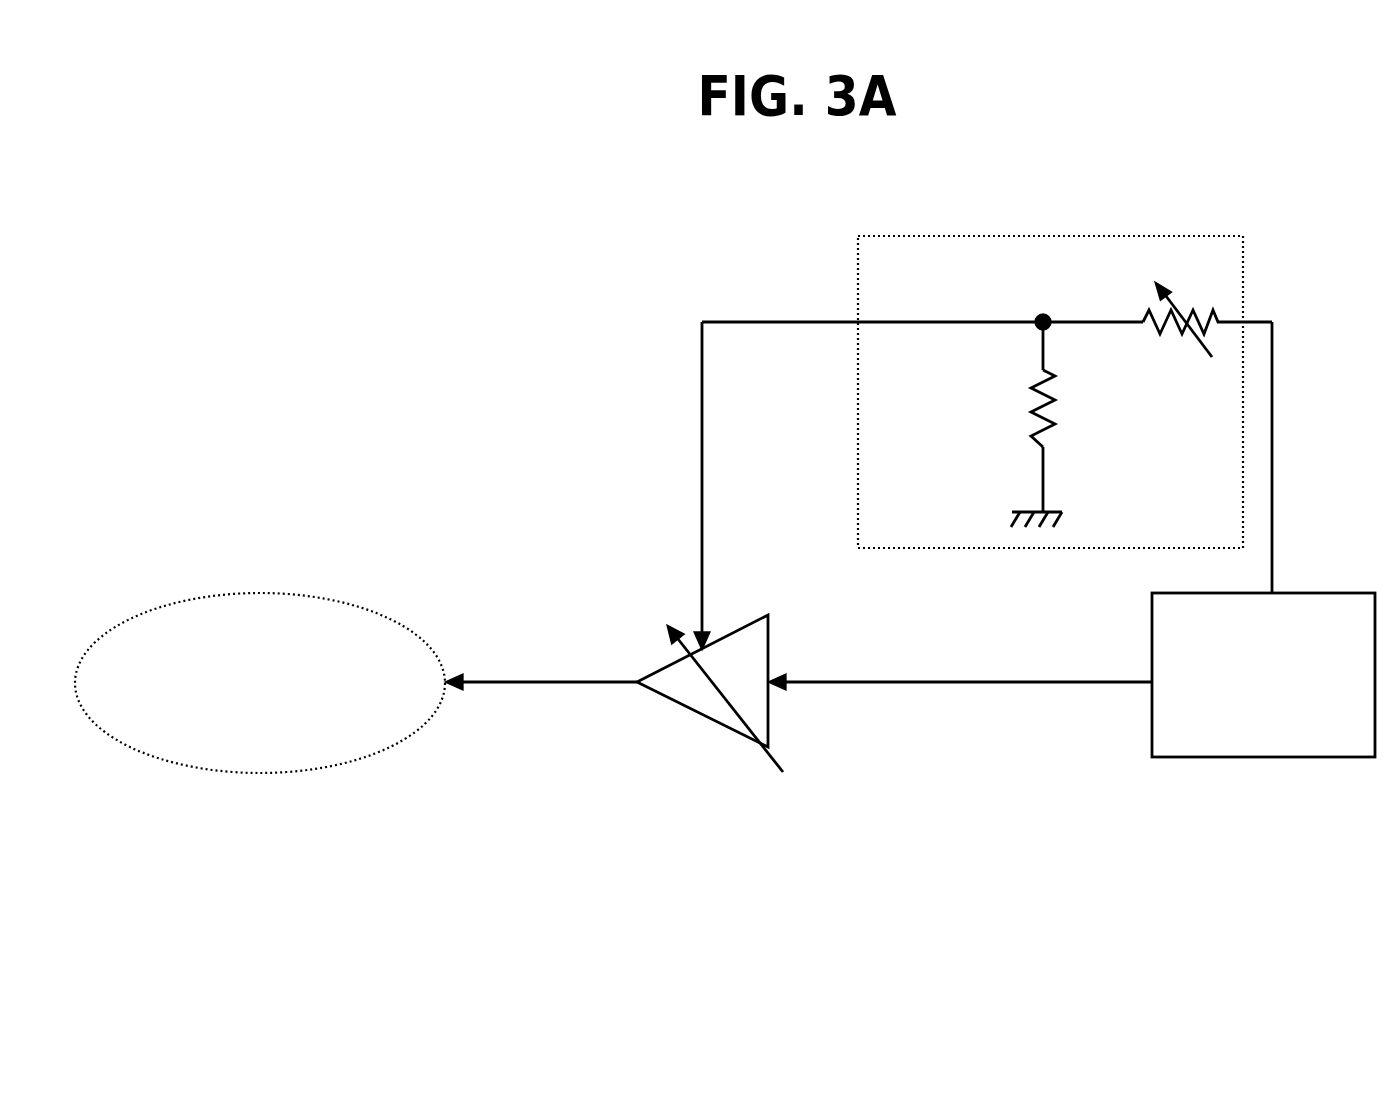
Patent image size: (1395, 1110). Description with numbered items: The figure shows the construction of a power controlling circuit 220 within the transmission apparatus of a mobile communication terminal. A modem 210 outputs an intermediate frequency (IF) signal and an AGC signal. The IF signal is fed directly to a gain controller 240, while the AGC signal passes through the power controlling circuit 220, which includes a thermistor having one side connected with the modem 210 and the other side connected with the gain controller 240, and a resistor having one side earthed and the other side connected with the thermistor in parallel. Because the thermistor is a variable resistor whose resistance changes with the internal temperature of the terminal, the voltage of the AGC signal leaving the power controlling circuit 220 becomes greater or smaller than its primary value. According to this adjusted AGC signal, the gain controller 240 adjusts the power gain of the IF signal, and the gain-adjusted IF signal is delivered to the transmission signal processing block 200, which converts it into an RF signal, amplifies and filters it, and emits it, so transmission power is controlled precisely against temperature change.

The transmission signal processing block 200 is at (260, 593).
The modem 210 is at (1262, 758).
The power controlling circuit 220 is at (1052, 548).
The gain controller 240 is at (702, 718).